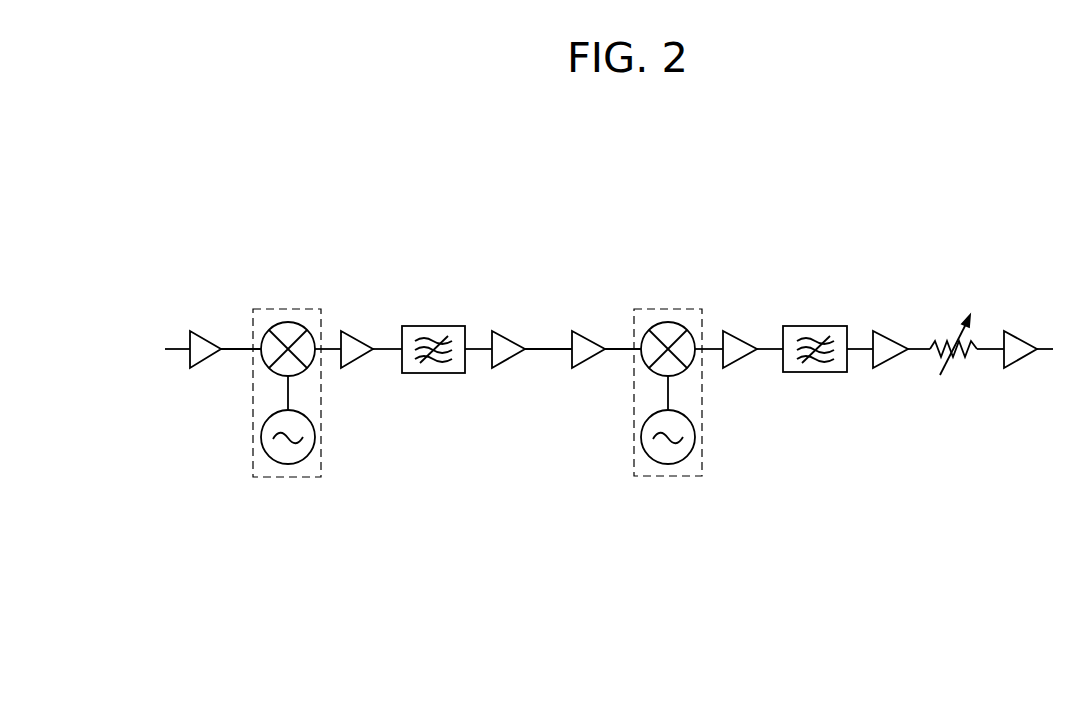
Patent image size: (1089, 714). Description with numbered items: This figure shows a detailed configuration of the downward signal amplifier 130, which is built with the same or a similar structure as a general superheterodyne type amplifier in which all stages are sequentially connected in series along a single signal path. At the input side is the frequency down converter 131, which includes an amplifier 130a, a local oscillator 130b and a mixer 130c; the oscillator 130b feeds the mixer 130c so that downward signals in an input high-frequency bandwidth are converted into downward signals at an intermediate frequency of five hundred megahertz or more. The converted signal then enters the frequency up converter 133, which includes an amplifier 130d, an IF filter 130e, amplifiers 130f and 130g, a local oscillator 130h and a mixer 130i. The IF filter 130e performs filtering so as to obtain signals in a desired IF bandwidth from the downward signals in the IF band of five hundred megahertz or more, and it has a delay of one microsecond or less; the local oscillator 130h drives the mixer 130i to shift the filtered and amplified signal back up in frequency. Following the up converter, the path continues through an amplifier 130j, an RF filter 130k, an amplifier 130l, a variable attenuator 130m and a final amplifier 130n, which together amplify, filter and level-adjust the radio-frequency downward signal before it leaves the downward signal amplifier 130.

The downward signal amplifier 130 is at (212, 222).
The amplifier 130a is at (211, 322).
The local oscillator 130b is at (331, 437).
The mixer 130c is at (288, 334).
The amplifier 130d is at (365, 322).
The IF filter 130e is at (433, 317).
The amplifier 130f is at (517, 311).
The amplifier 130g is at (596, 320).
The local oscillator 130h is at (709, 437).
The mixer 130i is at (670, 327).
The amplifier 130j is at (748, 320).
The RF filter 130k is at (815, 308).
The amplifier 130l is at (895, 321).
The variable attenuator 130m is at (950, 311).
The amplifier 130n is at (1034, 320).
The frequency down converter 131 is at (252, 462).
The frequency up converter 133 is at (633, 462).